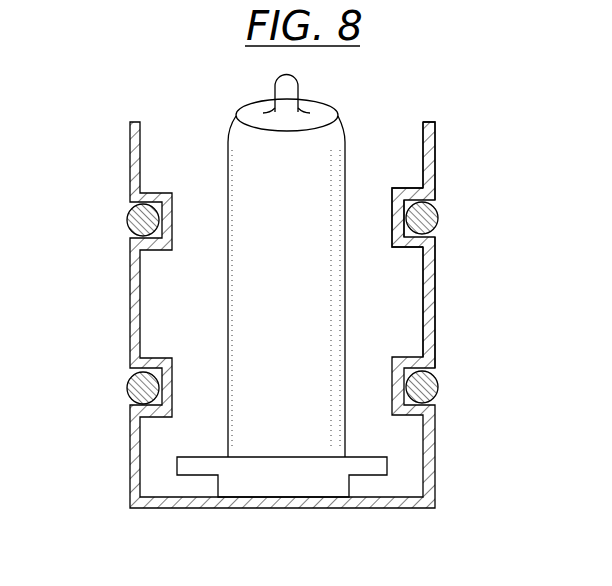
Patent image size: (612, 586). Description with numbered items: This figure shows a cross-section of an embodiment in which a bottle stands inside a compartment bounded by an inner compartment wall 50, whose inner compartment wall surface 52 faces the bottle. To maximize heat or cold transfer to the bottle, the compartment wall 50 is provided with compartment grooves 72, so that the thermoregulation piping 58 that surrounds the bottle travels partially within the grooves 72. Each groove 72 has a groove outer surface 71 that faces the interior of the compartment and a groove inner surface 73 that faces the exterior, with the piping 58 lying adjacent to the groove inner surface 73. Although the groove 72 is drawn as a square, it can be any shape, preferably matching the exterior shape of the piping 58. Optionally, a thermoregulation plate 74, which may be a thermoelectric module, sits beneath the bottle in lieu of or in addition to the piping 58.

The inner compartment wall 50 is at (431, 150).
The inner compartment wall surface 52 is at (424, 140).
The thermoregulation piping 58 is at (128, 383).
The groove outer surface 71 is at (423, 188).
The compartment groove 72 is at (395, 247).
The groove inner surface 73 is at (416, 373).
The thermoregulation plate 74 is at (260, 480).